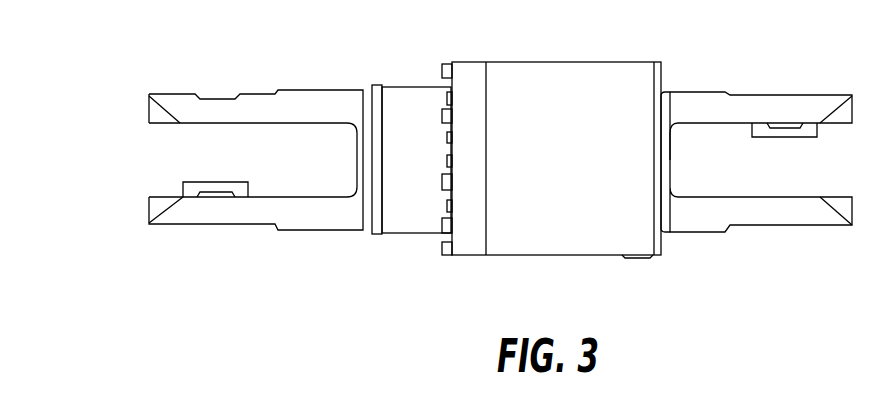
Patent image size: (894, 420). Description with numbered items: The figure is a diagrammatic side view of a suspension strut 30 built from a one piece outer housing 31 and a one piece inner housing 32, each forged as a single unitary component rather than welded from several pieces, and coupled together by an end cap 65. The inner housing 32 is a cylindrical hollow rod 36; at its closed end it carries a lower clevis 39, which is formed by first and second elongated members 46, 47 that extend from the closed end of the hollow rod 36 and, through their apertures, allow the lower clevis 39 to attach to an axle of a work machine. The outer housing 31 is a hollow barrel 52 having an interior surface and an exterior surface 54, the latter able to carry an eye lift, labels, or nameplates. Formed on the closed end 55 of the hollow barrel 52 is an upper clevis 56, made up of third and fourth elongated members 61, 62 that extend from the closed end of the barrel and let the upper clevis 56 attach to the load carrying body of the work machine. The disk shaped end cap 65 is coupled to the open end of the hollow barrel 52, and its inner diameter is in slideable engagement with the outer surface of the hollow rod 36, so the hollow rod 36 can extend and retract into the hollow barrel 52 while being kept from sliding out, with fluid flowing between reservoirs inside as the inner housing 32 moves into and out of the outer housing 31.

The suspension strut 30 is at (440, 47).
The outer housing 31 is at (589, 157).
The inner housing 32 is at (300, 173).
The hollow rod 36 is at (408, 95).
The lower clevis 39 is at (368, 234).
The first elongated member 46 is at (227, 102).
The second elongated member 47 is at (227, 218).
The hollow barrel 52 is at (560, 62).
The exterior surface 54 is at (555, 245).
The closed end 55 is at (660, 63).
The upper clevis 56 is at (665, 102).
The third elongated member 61 is at (802, 217).
The fourth elongated member 62 is at (802, 103).
The end cap 65 is at (467, 70).